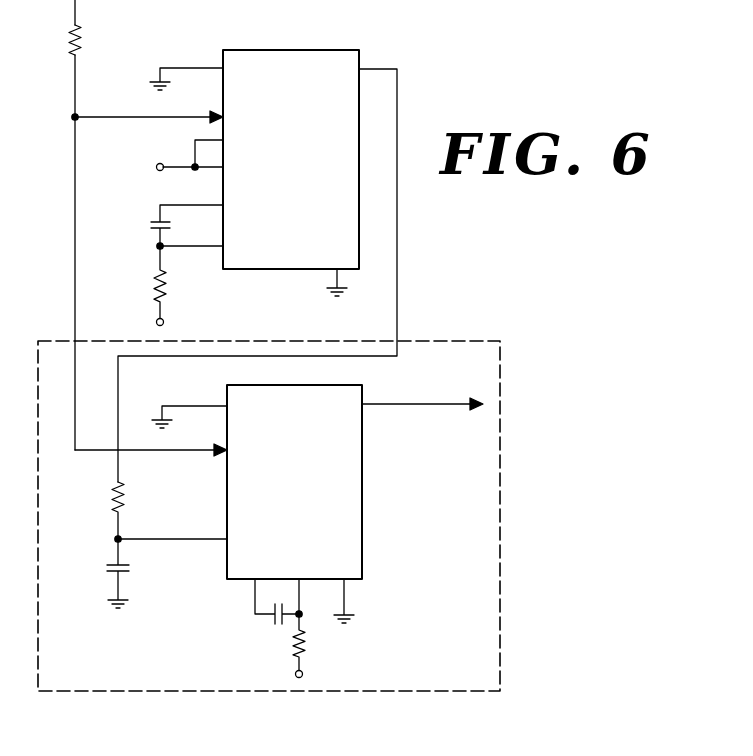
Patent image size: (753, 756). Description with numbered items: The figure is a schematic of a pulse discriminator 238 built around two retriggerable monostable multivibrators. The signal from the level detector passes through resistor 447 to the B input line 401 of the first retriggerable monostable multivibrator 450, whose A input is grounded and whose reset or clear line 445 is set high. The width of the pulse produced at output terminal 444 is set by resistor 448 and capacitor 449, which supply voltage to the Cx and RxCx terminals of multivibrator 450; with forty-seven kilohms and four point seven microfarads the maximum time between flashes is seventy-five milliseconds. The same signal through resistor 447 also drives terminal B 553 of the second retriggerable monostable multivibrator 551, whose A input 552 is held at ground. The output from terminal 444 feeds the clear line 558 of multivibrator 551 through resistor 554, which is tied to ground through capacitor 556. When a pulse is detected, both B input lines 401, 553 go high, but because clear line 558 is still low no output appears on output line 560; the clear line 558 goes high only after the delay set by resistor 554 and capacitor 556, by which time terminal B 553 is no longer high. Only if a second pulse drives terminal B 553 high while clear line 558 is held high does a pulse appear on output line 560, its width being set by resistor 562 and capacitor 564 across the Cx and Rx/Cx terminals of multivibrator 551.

The resistor 447 is at (81, 40).
The resistor 448 is at (197, 68).
The B input line 401 is at (200, 110).
The reset or clear line 445 is at (172, 163).
The retriggerable monostable multivibrator 450 is at (304, 50).
The output terminal 444 is at (397, 69).
The capacitor 449 is at (150, 232).
The discriminator 238 is at (462, 336).
The A input 552 is at (196, 406).
The second retriggerable monostable multivibrator 551 is at (362, 385).
The terminal B 553 is at (230, 453).
The resistor 554 is at (123, 486).
The clear line 558 is at (194, 537).
The capacitor 556 is at (130, 568).
The output line 560 is at (398, 406).
The capacitor 564 is at (268, 625).
The resistor 562 is at (305, 638).